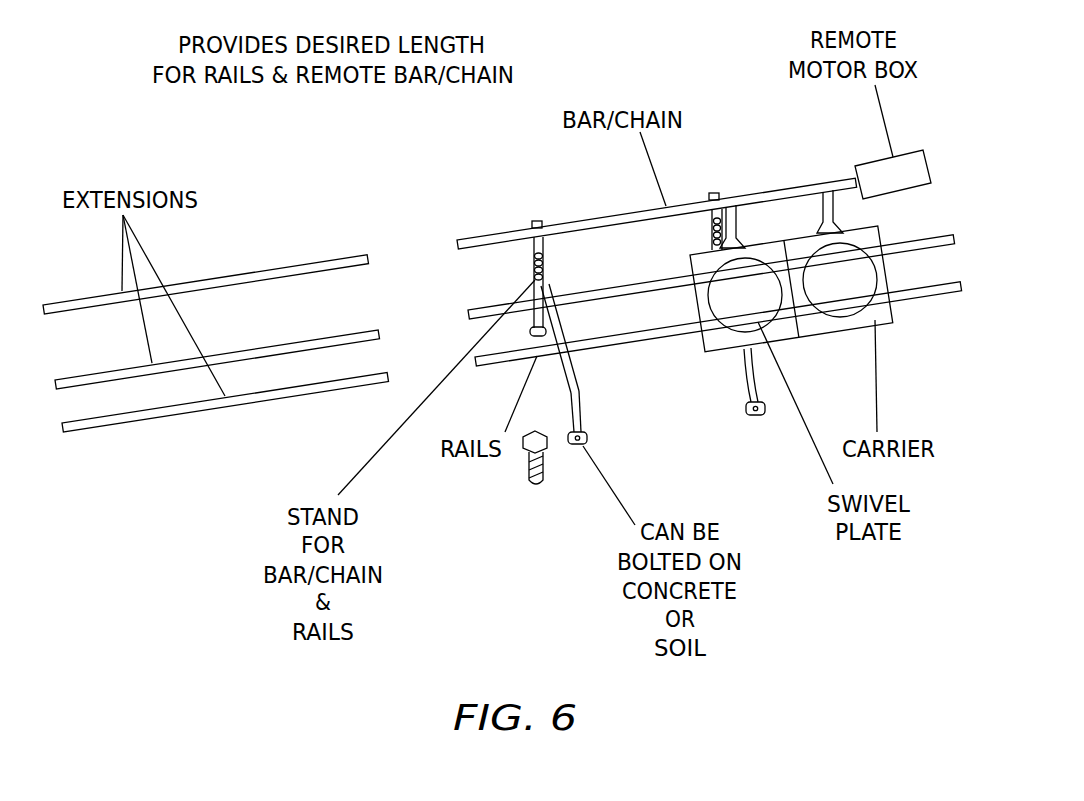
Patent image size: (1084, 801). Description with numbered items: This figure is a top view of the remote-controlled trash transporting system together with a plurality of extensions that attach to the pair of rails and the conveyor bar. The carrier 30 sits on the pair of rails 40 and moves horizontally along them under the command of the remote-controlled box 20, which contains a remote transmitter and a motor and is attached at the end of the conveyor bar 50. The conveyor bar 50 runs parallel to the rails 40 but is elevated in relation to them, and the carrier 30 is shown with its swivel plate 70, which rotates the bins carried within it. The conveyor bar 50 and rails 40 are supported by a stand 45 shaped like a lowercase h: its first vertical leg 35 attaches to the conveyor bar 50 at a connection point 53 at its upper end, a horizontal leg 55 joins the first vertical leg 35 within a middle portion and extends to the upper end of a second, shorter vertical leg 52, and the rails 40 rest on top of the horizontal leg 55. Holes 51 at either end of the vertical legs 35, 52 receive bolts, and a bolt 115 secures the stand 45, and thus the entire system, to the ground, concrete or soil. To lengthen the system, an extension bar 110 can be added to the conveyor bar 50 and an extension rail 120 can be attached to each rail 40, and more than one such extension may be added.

The remote-controlled box 20 is at (855, 167).
The carrier 30 is at (697, 297).
The first vertical leg 35 is at (532, 266).
The pair of rails 40 is at (668, 338).
The stand for rails 45 is at (530, 250).
The conveyor bar 50 is at (566, 222).
The holes for receiving bolts 51 is at (533, 333).
The shorter vertical leg 52 is at (581, 413).
The connection point 53 is at (533, 221).
The horizontal leg 55 is at (562, 328).
The swivel plate 70 is at (755, 289).
The extension bar 110 is at (311, 258).
The bolt 115 is at (530, 484).
The extension rail 120 is at (175, 421).